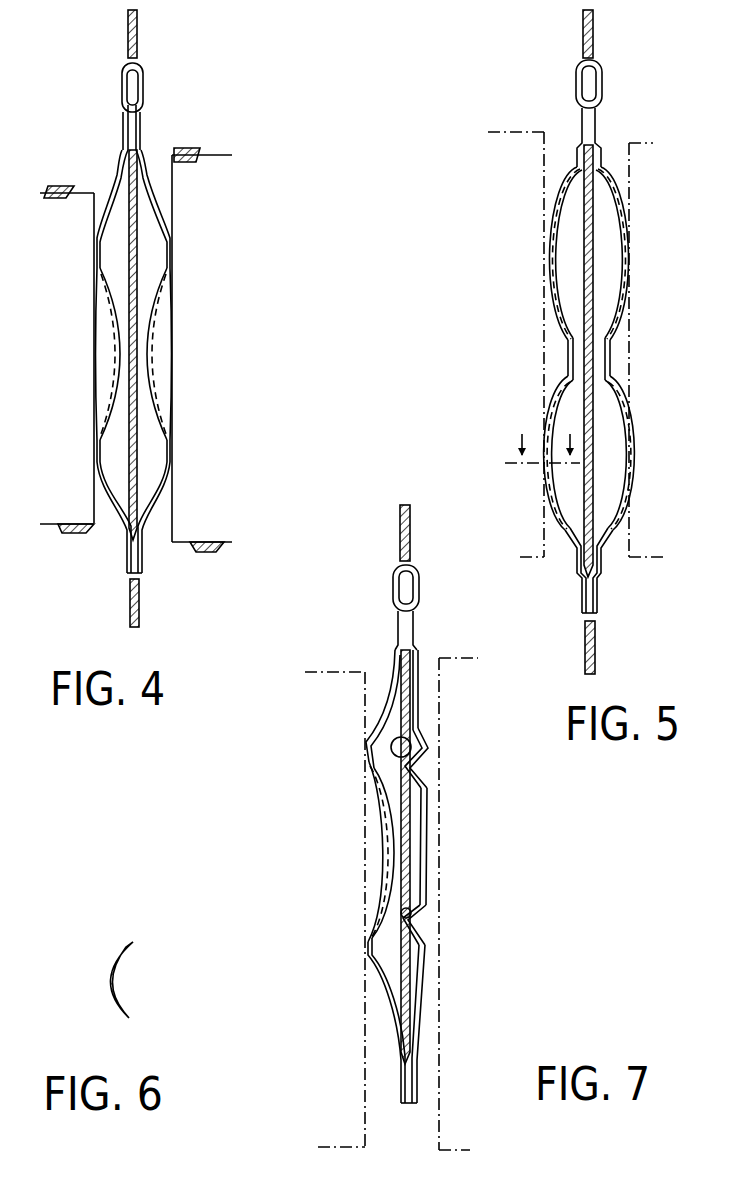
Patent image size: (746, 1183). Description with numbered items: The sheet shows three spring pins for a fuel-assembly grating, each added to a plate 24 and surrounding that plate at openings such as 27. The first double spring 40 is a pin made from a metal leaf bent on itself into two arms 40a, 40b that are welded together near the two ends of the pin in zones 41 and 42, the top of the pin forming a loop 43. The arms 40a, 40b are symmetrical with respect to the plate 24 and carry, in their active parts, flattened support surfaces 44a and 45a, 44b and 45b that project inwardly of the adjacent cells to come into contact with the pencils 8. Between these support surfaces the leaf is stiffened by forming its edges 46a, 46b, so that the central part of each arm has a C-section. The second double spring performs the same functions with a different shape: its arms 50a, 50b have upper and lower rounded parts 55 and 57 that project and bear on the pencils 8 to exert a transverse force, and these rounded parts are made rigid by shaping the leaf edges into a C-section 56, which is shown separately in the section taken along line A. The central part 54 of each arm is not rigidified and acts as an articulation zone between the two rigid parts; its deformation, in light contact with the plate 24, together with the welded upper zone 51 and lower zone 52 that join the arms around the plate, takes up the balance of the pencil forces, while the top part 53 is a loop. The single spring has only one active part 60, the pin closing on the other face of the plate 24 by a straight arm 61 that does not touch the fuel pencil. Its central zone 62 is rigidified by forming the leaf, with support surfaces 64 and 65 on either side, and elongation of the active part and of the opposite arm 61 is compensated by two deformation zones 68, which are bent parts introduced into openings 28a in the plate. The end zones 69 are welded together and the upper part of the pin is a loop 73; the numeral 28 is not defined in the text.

In FIG. 4, the pencil 8 is at (58, 192).
In FIG. 5, the pencil 8 is at (515, 294).
In FIG. 7, the pencil 8 is at (325, 672).
In FIG. 4, the plate 24 is at (130, 182).
In FIG. 5, the plate 24 is at (583, 178).
In FIG. 7, the plate 24 is at (405, 857).
In FIG. 4, the opening 27 is at (138, 50).
In FIG. 4, the distal wire 28 is at (140, 586).
In FIG. 7, the opening 28a is at (411, 744).
In FIG. 4, the double spring 40 is at (171, 330).
In FIG. 4, the arm 40a is at (114, 502).
In FIG. 4, the arm 40b is at (150, 505).
In FIG. 4, the welding zone 41 is at (124, 128).
In FIG. 4, the welding zone 42 is at (127, 564).
In FIG. 4, the loop 43 is at (124, 66).
In FIG. 4, the support surface 44a is at (97, 448).
In FIG. 4, the support surface 44b is at (172, 448).
In FIG. 4, the support surface 45a is at (97, 253).
In FIG. 4, the support surface 45b is at (171, 253).
In FIG. 4, the edge 46a is at (100, 352).
In FIG. 4, the edge 46b is at (166, 352).
In FIG. 5, the arm 50a is at (566, 530).
In FIG. 5, the arm 50b is at (612, 532).
In FIG. 5, the upper zone 51 is at (595, 130).
In FIG. 5, the lower zone 52 is at (596, 598).
In FIG. 5, the top part 53 is at (578, 76).
In FIG. 5, the central part 54 is at (611, 362).
In FIG. 5, the upper rounded part 55 is at (554, 260).
In FIG. 5, the C-section 56 is at (620, 256).
In FIG. 6, the C-section 56 is at (106, 956).
In FIG. 5, the lower rounded part 57 is at (554, 428).
In FIG. 7, the active part 60 is at (370, 796).
In FIG. 7, the straight arm 61 is at (426, 852).
In FIG. 7, the central zone 62 is at (380, 862).
In FIG. 7, the support surface 64 is at (366, 746).
In FIG. 7, the support surface 65 is at (368, 952).
In FIG. 7, the deformation zone 68 is at (411, 770).
In FIG. 7, the end zone 69 is at (398, 620).
In FIG. 7, the loop 73 is at (394, 572).
In FIG. 5, the section line A— A is at (542, 462).